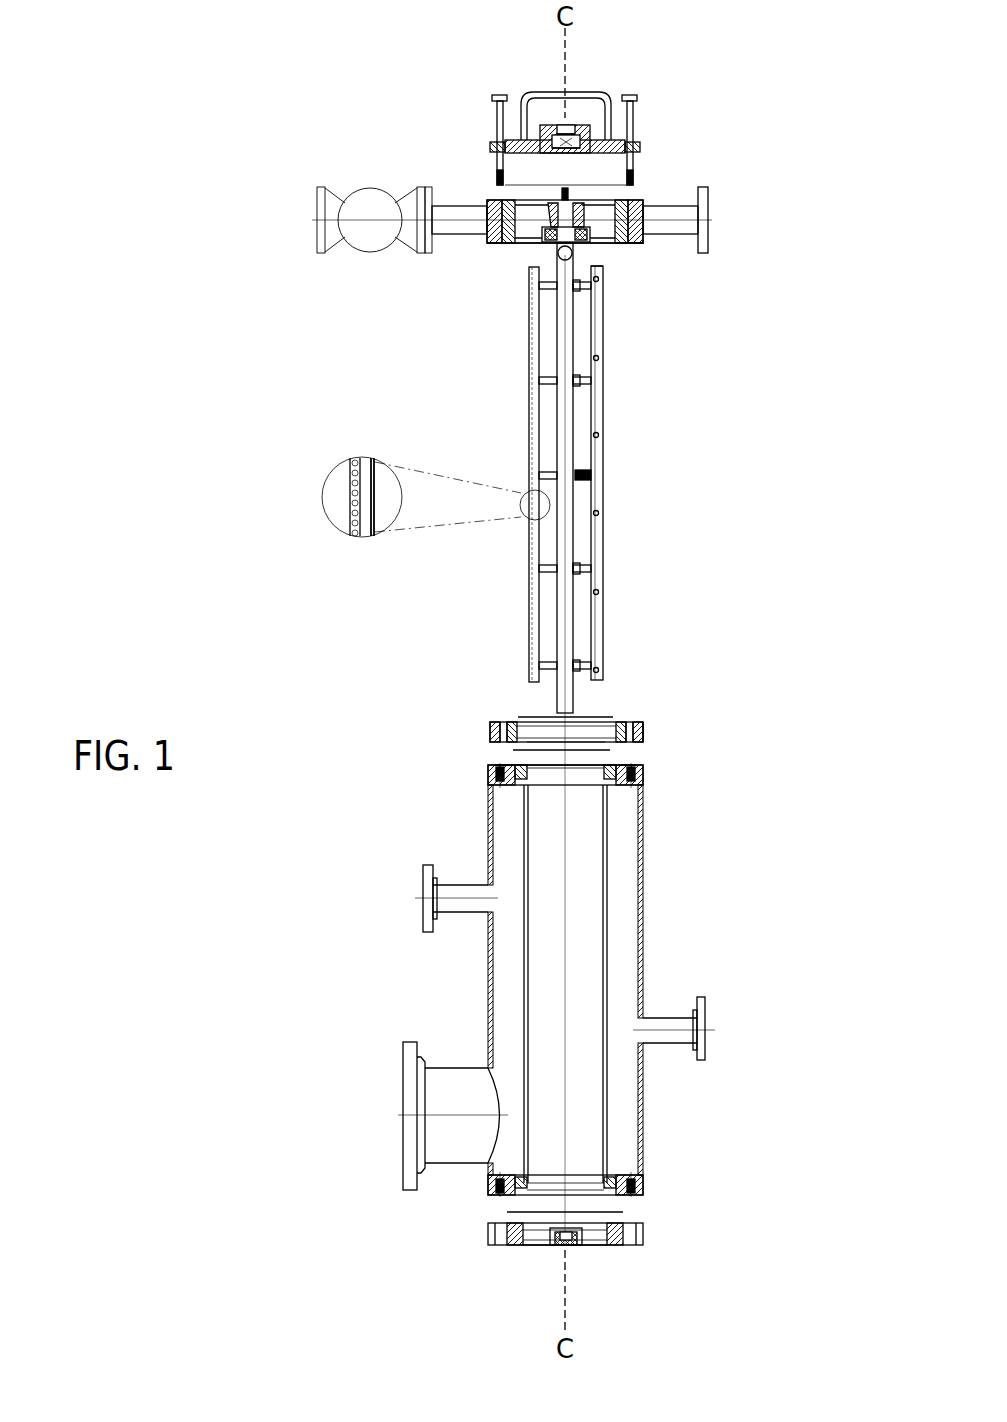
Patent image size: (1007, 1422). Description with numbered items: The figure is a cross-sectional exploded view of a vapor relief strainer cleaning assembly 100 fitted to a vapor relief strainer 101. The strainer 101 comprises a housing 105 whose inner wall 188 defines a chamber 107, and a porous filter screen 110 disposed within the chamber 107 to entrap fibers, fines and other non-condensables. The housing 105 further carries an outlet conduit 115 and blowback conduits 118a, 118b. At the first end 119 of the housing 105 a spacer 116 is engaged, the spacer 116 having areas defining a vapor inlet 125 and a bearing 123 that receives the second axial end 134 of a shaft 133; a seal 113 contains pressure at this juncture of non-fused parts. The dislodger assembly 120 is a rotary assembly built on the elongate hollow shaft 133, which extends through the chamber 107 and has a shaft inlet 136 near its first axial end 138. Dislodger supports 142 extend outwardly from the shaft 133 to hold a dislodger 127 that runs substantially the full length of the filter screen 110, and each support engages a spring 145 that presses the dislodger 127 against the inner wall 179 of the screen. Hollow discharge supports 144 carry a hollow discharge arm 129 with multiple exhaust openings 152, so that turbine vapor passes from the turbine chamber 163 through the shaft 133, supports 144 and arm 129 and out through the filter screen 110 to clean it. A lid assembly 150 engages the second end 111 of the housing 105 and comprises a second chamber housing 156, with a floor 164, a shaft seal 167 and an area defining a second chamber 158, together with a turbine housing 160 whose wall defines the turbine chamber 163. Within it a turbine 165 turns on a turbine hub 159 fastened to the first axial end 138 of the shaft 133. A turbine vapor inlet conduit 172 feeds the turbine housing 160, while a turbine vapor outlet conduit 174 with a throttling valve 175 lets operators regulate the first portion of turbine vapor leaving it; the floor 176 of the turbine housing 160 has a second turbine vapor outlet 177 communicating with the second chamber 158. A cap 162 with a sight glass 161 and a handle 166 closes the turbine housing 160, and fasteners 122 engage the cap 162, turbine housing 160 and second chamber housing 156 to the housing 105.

The vapor relief strainer cleaning assembly 100 is at (128, 214).
The vapor relief strainer 101 is at (401, 962).
The housing 105 is at (641, 915).
The chamber 107 is at (495, 823).
The filter screen 110 is at (597, 870).
The second end 111 is at (673, 750).
The seal 113 is at (590, 718).
The outlet conduit 115 is at (455, 1152).
The spacer 116 is at (615, 1245).
The blowback conduit 118a is at (447, 884).
The blowback conduit 118b is at (655, 1020).
The first end 119 is at (486, 1205).
The dislodger assembly 120 is at (521, 582).
The fasteners 122 is at (634, 100).
The bearing 123 is at (568, 1247).
The vapor inlet 125 is at (540, 1240).
The dislodger 127 is at (603, 325).
The discharge arm 129 is at (531, 270).
The shaft 133 is at (560, 430).
The second axial end 134 is at (598, 702).
The shaft inlet 136 is at (540, 244).
The first axial end 138 is at (583, 183).
The dislodger supports 142 is at (583, 567).
The discharge supports 144 is at (549, 567).
The spring 145 is at (581, 470).
The lid assembly 150 is at (714, 148).
The exhaust openings 152 is at (355, 506).
The second chamber housing 156 is at (644, 730).
The second chamber 158 is at (527, 722).
The turbine hub 159 is at (560, 203).
The turbine housing 160 is at (492, 200).
The sight glass 161 is at (567, 125).
The cap 162 is at (640, 147).
The turbine chamber 163 is at (597, 206).
The floor 164 is at (643, 742).
The turbine 165 is at (625, 272).
The handle 166 is at (545, 91).
The shaft seal 167 is at (573, 742).
The turbine vapor inlet conduit 172 is at (708, 197).
The turbine vapor outlet conduit 174 is at (453, 234).
The throttling valve 175 is at (373, 200).
The floor 176 is at (622, 250).
The second turbine vapor outlet 177 is at (487, 245).
The inner wall 179 is at (587, 1088).
The inner wall 188 is at (513, 982).